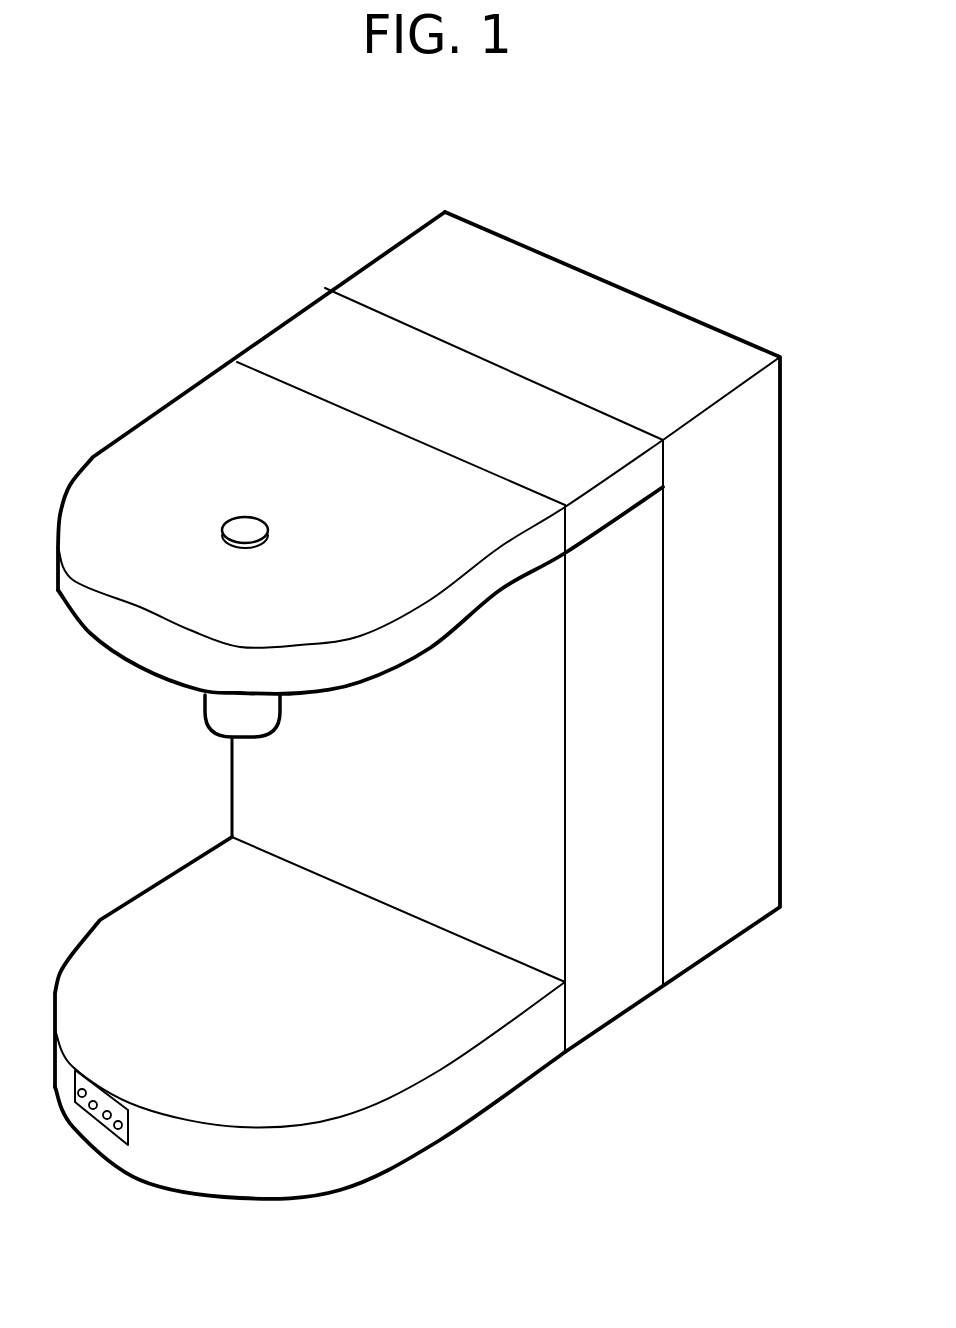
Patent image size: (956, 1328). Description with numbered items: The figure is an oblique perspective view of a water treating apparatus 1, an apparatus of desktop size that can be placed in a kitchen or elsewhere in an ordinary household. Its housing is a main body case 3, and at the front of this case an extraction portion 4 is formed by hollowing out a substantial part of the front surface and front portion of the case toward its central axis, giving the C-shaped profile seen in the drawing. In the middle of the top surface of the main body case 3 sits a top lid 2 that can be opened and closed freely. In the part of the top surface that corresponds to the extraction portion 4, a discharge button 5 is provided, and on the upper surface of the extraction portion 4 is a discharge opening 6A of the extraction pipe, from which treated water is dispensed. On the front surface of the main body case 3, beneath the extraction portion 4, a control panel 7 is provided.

The water treating apparatus 1 is at (262, 306).
The top lid 2 is at (377, 328).
The main body case 3 is at (737, 630).
The extraction portion 4 is at (135, 781).
The discharge button 5 is at (236, 518).
The discharge opening 6A is at (206, 704).
The control panel 7 is at (95, 1117).